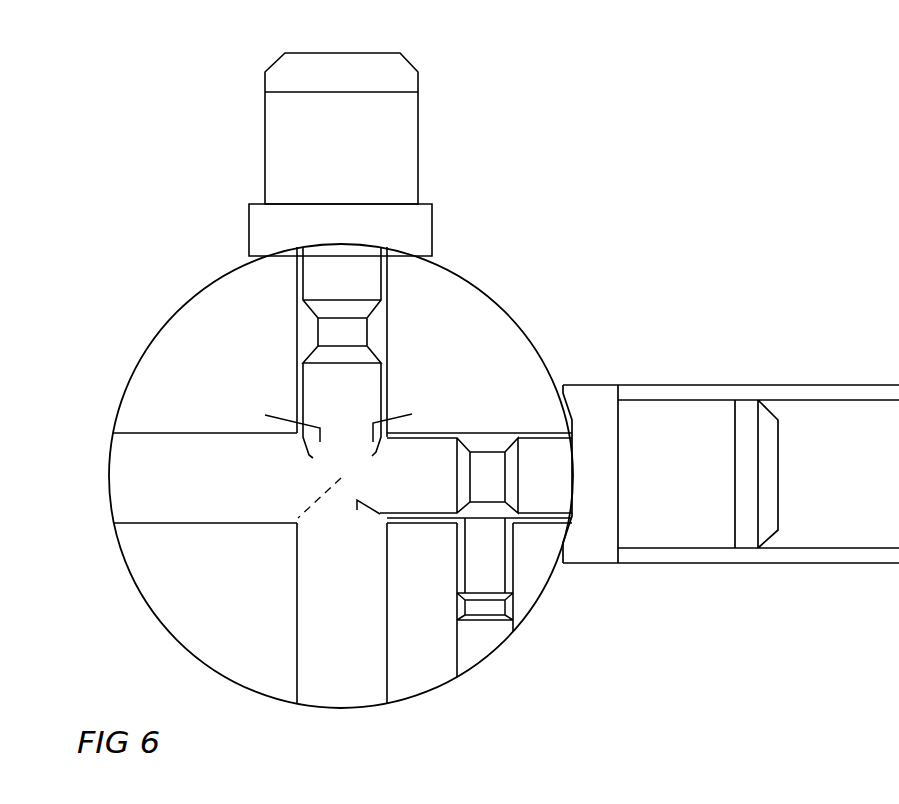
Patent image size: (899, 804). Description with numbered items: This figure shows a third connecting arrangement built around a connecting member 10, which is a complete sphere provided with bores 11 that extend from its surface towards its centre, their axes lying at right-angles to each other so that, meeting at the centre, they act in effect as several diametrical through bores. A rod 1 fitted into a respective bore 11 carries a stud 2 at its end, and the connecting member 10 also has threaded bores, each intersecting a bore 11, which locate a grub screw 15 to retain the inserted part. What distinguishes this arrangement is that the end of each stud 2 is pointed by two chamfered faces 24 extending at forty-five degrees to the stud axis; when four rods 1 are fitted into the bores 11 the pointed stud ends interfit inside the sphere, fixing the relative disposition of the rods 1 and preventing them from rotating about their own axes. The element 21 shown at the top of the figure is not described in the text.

The rod 1 is at (695, 385).
The stud 2 is at (352, 373).
The connecting member 10 is at (175, 640).
The blind bore 11 is at (125, 473).
The grub screw 15 is at (488, 562).
The fitting 21 is at (418, 127).
The chamfered face 24 is at (341, 478).